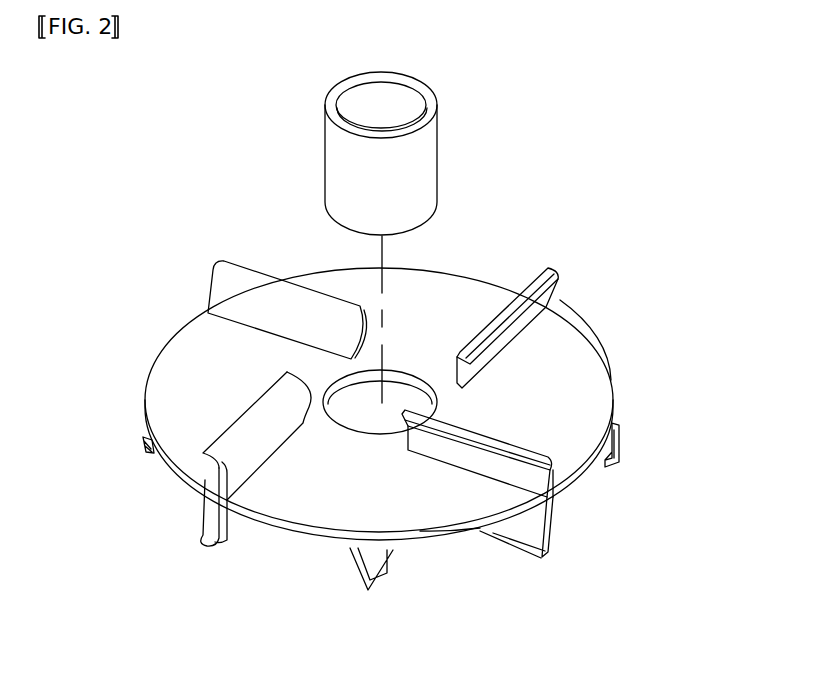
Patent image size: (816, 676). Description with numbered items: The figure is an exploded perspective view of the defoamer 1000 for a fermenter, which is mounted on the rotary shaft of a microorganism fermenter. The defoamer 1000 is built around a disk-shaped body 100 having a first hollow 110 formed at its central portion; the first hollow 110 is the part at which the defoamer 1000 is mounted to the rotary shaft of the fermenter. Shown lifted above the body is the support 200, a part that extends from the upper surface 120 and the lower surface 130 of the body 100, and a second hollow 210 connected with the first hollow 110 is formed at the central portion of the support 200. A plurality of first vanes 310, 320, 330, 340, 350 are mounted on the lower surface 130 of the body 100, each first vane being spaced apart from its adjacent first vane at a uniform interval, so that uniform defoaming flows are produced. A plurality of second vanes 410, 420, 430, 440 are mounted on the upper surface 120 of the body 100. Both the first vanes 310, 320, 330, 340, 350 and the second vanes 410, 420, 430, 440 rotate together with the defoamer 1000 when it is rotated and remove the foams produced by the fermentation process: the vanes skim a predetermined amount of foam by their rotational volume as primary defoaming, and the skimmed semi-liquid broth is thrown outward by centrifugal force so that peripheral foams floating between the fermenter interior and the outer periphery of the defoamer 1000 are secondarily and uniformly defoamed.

The defoamer for a fermenter 1000 is at (146, 348).
The body 100 is at (617, 400).
The first hollow 110 is at (358, 416).
The upper surface 120 is at (593, 372).
The lower surface 130 is at (452, 550).
The support 200 is at (437, 175).
The second hollow 210 is at (383, 108).
The first vane 310 is at (622, 450).
The first vane 320 is at (520, 545).
The first vane 330 is at (372, 595).
The first vane 340 is at (230, 548).
The first vane 350 is at (143, 445).
The second vane 410 is at (548, 300).
The second vane 420 is at (560, 483).
The second vane 430 is at (205, 480).
The second vane 440 is at (207, 293).